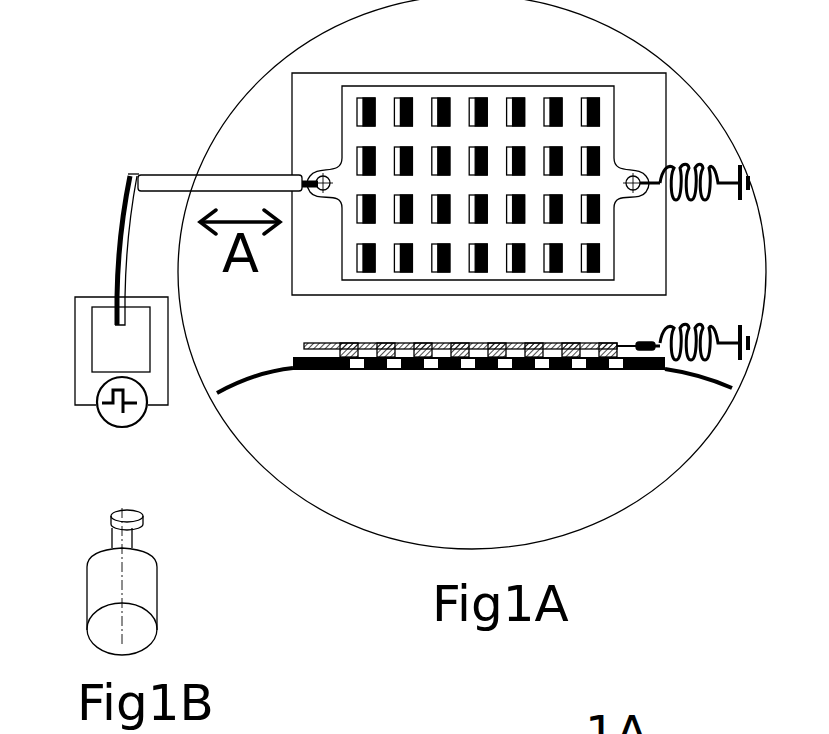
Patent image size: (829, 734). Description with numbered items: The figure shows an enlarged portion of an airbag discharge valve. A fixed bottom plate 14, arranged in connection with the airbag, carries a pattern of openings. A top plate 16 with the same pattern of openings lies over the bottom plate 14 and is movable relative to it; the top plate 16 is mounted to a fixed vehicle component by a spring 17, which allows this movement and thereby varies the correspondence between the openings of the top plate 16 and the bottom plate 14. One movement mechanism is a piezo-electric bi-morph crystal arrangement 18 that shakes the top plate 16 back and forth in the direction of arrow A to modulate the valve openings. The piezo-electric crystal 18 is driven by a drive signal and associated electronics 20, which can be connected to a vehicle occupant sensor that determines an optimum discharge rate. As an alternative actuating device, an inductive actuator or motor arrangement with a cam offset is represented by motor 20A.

In FIG. 1A, the bottom plate 14 is at (618, 372).
In FIG. 1A, the top plate 16 is at (600, 350).
In FIG. 1A, the spring 17 is at (705, 207).
In FIG. 1A, the piezo-electric bi-morph crystal arrangement 18 is at (120, 215).
In FIG. 1A, the drive signal and associated electronics 20 is at (85, 297).
In FIG. 1B, the motor 20A is at (160, 608).